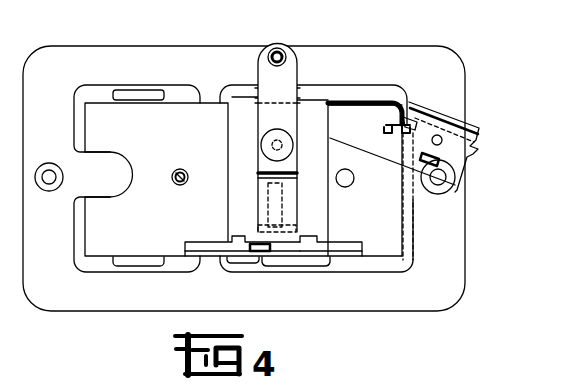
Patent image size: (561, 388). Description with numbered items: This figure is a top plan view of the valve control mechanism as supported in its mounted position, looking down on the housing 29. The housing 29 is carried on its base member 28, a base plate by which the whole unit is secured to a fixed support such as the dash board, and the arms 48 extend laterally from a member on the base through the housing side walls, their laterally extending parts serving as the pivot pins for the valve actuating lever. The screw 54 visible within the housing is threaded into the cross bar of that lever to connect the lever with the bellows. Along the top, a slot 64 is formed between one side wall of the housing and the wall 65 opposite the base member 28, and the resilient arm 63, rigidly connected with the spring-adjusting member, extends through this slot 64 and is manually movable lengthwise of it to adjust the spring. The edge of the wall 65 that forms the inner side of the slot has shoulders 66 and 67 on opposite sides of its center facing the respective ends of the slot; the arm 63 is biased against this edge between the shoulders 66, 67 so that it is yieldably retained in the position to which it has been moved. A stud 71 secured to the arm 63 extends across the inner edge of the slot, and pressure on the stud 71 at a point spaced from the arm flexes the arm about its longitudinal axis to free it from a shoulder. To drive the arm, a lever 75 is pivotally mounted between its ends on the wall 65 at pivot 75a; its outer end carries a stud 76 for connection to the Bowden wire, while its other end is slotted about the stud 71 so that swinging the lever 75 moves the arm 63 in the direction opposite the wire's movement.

The base member 28 is at (363, 47).
The housing 29 is at (368, 86).
The arms 48 is at (160, 82).
The screw 54 is at (174, 171).
The arm 63 is at (258, 252).
The slot 64 is at (338, 247).
The wall 65 is at (100, 237).
The shoulder 66 is at (250, 236).
The shoulder 67 is at (302, 238).
The stud 71 is at (287, 200).
The lever 75 is at (268, 118).
The pivot 75a is at (267, 145).
The stud 76 is at (288, 50).